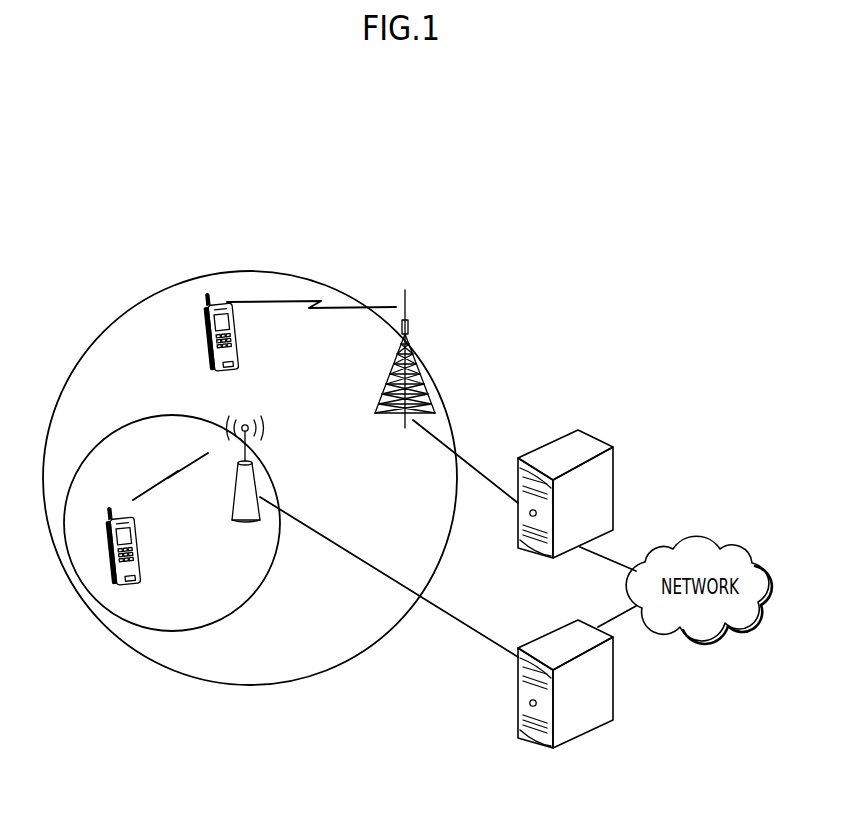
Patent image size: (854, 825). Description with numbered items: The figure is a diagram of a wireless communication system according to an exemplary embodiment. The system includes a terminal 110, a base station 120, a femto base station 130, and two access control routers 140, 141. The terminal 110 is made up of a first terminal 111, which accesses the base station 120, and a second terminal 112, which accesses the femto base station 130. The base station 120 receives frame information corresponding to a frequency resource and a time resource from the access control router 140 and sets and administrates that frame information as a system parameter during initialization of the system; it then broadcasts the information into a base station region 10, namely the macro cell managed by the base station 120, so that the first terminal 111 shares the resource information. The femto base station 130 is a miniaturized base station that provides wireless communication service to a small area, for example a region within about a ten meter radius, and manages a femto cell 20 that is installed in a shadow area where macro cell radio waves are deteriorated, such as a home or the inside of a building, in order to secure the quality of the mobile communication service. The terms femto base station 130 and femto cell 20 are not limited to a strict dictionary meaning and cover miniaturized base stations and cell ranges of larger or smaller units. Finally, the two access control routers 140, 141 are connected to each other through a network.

The base station region 10 is at (293, 270).
The femto cell 20 is at (155, 632).
The terminal 110 is at (123, 245).
The first terminal 111 is at (204, 315).
The second terminal 112 is at (116, 518).
The base station 120 is at (421, 368).
The femto base station 130 is at (253, 463).
The access control router 140 is at (550, 442).
The access control router 141 is at (550, 630).